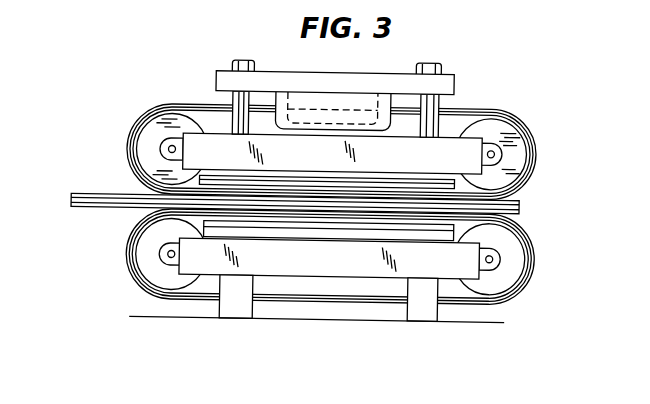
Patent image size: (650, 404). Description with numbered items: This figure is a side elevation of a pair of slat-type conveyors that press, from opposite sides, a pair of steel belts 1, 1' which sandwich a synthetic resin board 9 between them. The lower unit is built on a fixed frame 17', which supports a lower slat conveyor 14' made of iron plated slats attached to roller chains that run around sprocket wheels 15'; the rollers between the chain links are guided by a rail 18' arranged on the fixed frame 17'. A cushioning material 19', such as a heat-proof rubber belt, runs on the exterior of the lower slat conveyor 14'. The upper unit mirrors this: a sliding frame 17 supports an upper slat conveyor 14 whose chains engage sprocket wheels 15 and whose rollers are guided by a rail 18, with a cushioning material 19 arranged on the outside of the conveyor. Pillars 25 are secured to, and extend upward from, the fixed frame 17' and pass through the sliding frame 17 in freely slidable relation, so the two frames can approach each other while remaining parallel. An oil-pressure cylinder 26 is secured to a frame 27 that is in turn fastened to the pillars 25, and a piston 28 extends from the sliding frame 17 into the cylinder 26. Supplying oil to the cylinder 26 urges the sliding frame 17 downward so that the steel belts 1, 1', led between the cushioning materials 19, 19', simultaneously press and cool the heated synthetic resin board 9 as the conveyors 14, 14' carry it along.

The steel belt 1 is at (329, 201).
The steel belt 1' is at (281, 230).
The workpiece board 9 is at (72, 200).
The slat conveyor 14 is at (369, 151).
The slat conveyor 14' is at (359, 267).
The sprocket wheel 15 is at (322, 118).
The sprocket wheel 15' is at (297, 295).
The sliding frame 17 is at (333, 153).
The fixed frame 17' is at (329, 258).
The rail 18 is at (326, 167).
The rail 18' is at (329, 246).
The cushioning material 19 is at (347, 151).
The cushioning material 19' is at (368, 256).
The pillar 25 is at (235, 100).
The oil-pressure cylinder 26 is at (353, 103).
The frame 27 is at (443, 84).
The piston 28 is at (318, 130).